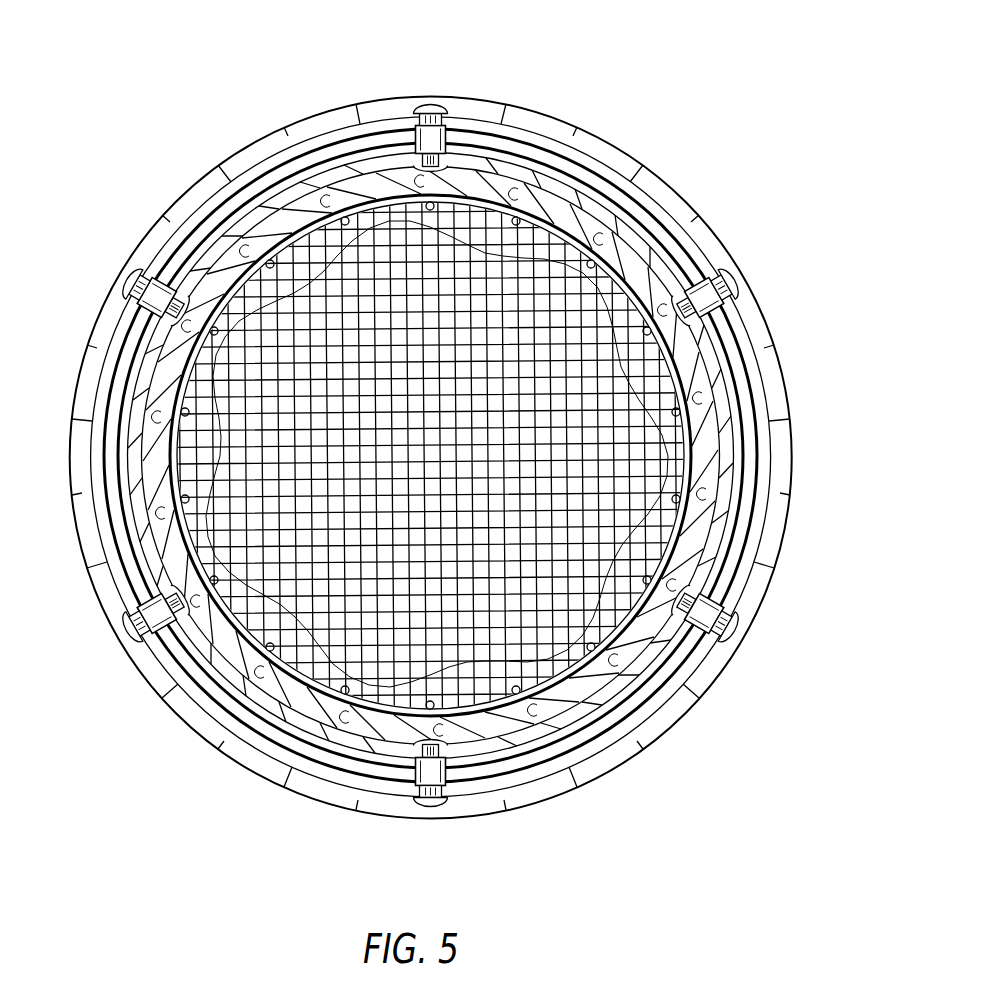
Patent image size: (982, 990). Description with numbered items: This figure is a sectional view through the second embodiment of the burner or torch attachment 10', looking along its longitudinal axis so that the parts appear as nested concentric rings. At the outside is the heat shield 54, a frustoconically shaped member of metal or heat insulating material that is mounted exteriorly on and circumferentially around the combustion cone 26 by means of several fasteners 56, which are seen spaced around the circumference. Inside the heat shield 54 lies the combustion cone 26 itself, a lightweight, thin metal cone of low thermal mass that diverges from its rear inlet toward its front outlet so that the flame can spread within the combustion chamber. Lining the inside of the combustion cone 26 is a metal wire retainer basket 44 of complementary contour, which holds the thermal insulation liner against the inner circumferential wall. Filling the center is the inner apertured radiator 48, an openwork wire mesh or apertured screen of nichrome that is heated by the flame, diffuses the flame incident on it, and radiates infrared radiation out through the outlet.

The torch attachment 10' is at (462, 442).
The combustion cone 26 is at (590, 202).
The metal wire retainer basket 44 is at (347, 210).
The inner apertured radiator 48 is at (590, 340).
The heat shield 54 is at (557, 122).
The fasteners 56 is at (437, 108).